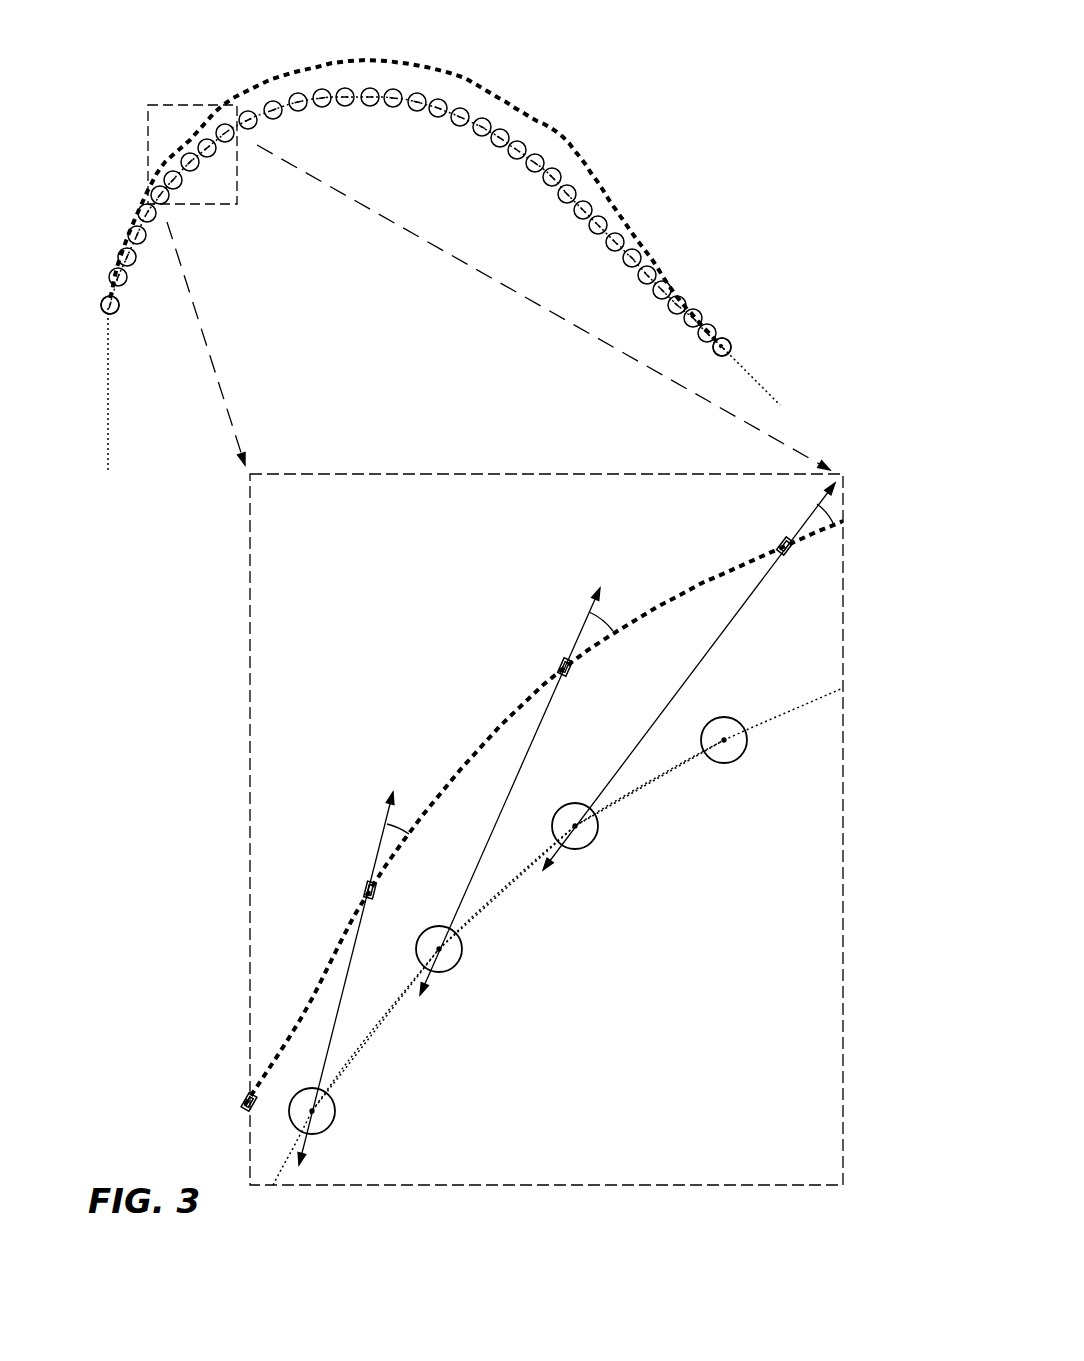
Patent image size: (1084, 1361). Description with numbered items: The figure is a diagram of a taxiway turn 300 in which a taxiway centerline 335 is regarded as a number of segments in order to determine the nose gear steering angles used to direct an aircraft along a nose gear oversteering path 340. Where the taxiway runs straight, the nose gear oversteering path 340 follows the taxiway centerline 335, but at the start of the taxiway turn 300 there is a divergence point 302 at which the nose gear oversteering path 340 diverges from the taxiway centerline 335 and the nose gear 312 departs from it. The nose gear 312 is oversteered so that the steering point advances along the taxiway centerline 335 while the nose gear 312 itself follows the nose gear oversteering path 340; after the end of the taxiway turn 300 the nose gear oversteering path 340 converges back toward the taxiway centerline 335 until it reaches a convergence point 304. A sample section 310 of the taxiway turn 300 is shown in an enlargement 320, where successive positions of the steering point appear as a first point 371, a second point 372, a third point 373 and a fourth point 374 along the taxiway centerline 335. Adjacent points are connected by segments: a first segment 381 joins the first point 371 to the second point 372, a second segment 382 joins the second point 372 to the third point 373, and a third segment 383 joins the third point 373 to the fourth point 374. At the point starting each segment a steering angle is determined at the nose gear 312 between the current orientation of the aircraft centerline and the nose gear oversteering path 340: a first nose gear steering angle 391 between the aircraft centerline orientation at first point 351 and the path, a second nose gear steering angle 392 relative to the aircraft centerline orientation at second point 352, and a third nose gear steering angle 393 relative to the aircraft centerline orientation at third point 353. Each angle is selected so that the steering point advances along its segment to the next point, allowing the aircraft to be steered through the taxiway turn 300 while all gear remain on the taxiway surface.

The taxiway turn 300 is at (800, 107).
The divergence point 302 is at (118, 305).
The convergence point 304 is at (732, 347).
The sample section 310 is at (197, 105).
The nose gear 312 is at (372, 877).
The enlargement 320 is at (250, 692).
The taxiway centerline 335 is at (112, 425).
The nose gear oversteering path 340 is at (303, 1003).
The aircraft centerline orientation at first point 351 is at (352, 957).
The aircraft centerline orientation at second point 352 is at (537, 720).
The aircraft centerline orientation at third point 353 is at (703, 657).
The first point 371 is at (337, 1113).
The second point 372 is at (452, 962).
The third point 373 is at (595, 837).
The fourth point 374 is at (747, 752).
The first segment 381 is at (383, 1022).
The second segment 382 is at (522, 868).
The third segment 383 is at (657, 782).
The first nose gear steering angle 391 is at (397, 817).
The second nose gear steering angle 392 is at (600, 618).
The third nose gear steering angle 393 is at (813, 528).